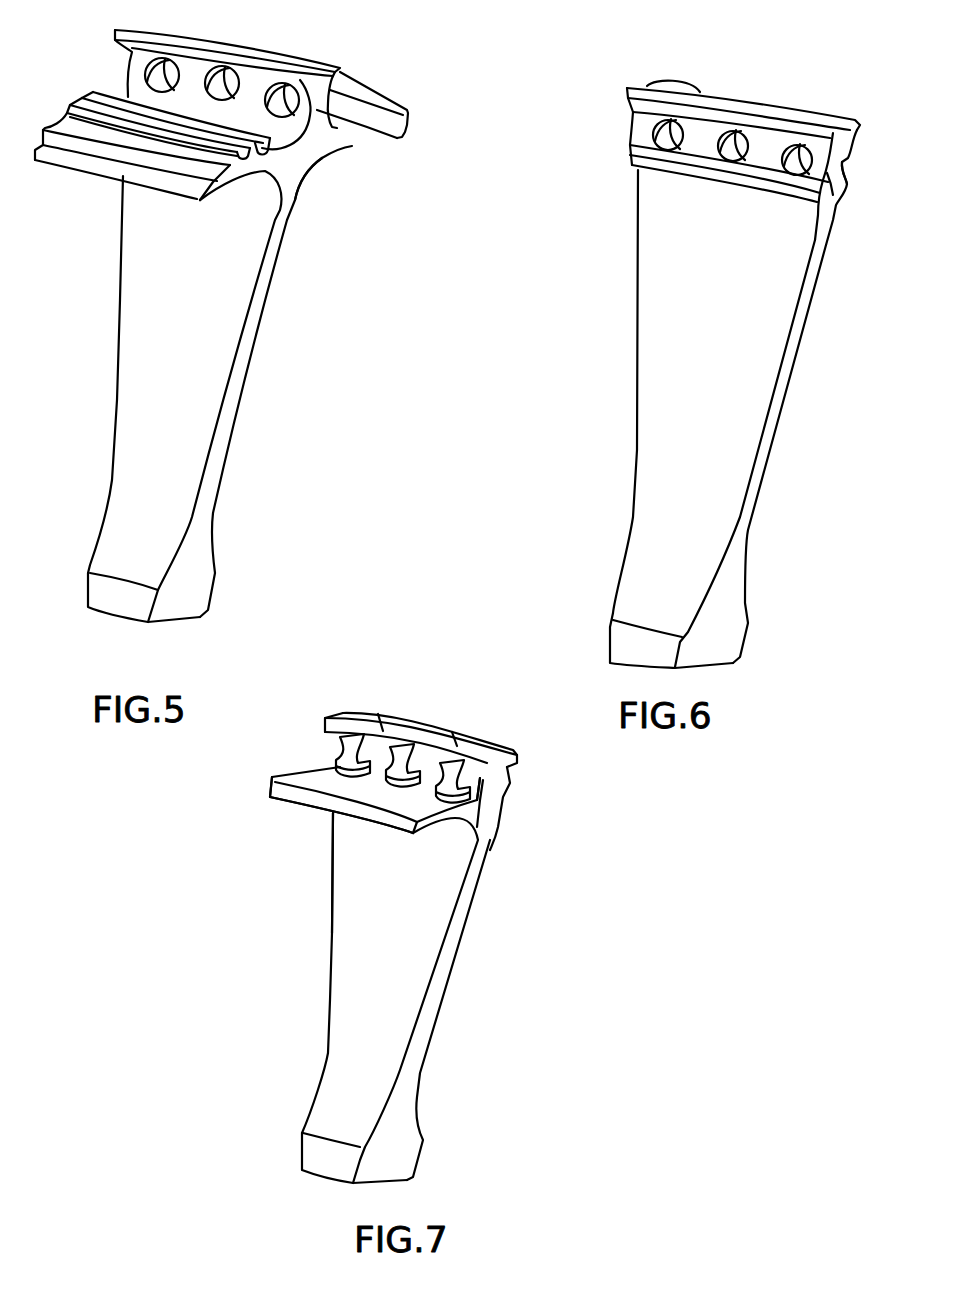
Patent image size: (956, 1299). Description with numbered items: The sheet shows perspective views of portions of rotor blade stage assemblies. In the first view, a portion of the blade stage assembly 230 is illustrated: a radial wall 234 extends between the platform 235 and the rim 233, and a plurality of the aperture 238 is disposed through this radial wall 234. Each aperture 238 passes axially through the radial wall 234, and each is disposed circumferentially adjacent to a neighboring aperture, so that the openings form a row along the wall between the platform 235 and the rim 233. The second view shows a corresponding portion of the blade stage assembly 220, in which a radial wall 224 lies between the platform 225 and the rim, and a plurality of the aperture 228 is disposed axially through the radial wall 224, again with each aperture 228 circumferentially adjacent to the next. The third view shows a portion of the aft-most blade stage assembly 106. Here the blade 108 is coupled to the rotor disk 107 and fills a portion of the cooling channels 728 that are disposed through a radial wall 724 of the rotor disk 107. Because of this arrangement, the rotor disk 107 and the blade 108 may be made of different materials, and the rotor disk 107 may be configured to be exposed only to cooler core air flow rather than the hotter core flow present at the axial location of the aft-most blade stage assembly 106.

In FIG. 5, the blade stage assembly 230 is at (400, 78).
In FIG. 5, the aperture 238 is at (160, 76).
In FIG. 5, the platform 235 is at (408, 112).
In FIG. 5, the radial wall 234 is at (397, 138).
In FIG. 5, the rim 233 is at (310, 152).
In FIG. 6, the rim 233 is at (833, 195).
In FIG. 6, the blade stage assembly 220 is at (818, 82).
In FIG. 6, the platform 225 is at (655, 86).
In FIG. 6, the aperture 228 is at (662, 132).
In FIG. 6, the radial wall 224 is at (840, 177).
In FIG. 7, the aft-most blade stage assembly 106 is at (453, 668).
In FIG. 7, the blade 108 is at (378, 714).
In FIG. 7, the cooling channels 728 is at (285, 782).
In FIG. 7, the radial wall 724 is at (490, 788).
In FIG. 7, the rotor disk 107 is at (398, 937).